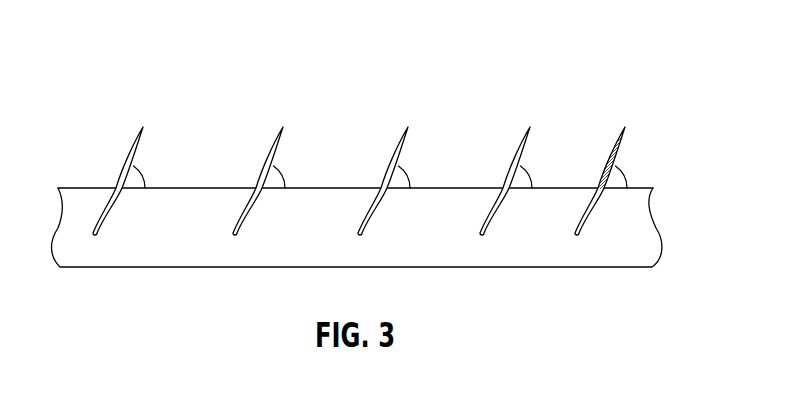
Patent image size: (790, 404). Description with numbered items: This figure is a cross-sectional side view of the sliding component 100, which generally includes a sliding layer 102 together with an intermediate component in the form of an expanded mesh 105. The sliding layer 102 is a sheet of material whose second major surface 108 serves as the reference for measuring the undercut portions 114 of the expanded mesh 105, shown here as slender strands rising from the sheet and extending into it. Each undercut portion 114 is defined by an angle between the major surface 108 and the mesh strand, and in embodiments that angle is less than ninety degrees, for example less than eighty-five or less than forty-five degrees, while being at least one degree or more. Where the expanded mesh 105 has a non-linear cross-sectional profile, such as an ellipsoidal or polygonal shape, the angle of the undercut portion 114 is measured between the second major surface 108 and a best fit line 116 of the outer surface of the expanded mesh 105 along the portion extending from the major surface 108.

The sliding component 100 is at (388, 47).
The sliding layer 102 is at (553, 255).
The expanded mesh 105 is at (396, 143).
The major surface 108 is at (473, 189).
The undercut portion 114 is at (145, 181).
The best fit line 116 is at (626, 123).